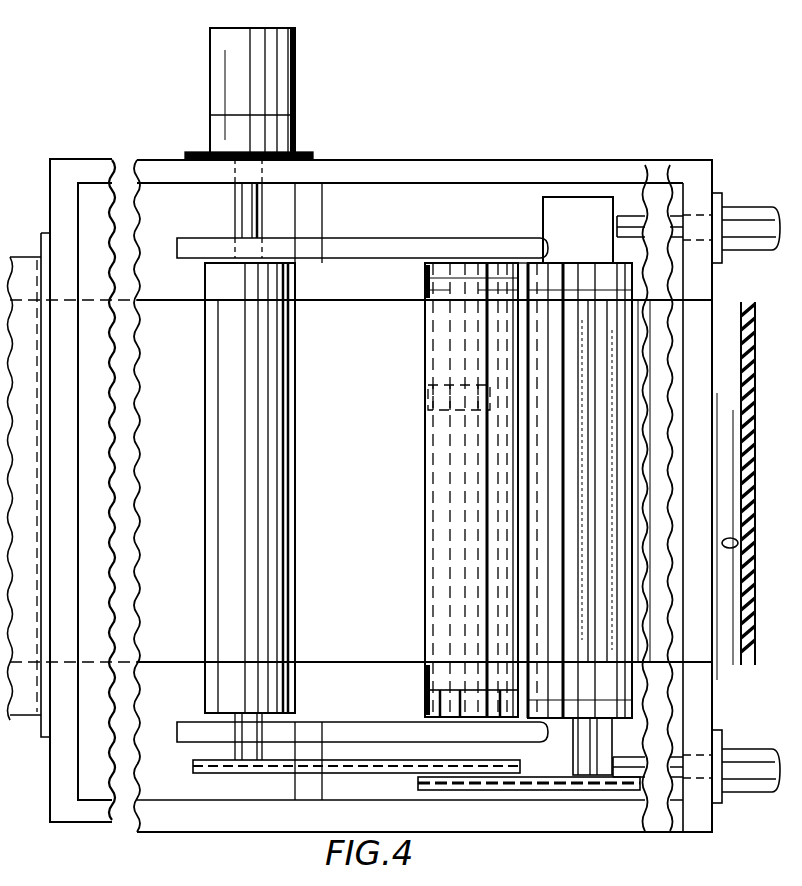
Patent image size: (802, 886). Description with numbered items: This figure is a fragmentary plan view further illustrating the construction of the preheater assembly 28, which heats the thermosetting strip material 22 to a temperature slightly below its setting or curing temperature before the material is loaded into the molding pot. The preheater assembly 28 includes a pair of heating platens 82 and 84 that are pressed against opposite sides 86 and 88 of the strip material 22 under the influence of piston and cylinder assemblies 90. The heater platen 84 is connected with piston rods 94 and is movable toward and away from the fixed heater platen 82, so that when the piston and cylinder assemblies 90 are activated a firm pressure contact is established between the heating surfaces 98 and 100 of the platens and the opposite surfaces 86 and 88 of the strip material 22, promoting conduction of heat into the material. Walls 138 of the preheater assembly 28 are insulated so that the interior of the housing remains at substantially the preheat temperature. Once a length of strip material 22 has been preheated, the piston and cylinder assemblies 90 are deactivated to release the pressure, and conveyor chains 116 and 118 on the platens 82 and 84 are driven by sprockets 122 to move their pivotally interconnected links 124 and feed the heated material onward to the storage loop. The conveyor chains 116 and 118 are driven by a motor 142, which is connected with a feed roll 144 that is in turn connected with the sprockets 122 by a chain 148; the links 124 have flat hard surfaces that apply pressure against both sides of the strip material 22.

The thermosetting strip material 22 is at (149, 288).
The preheater assembly 28 is at (480, 163).
The heating platen 82 is at (425, 280).
The heating platen 84 is at (633, 687).
The side of strip material 86 is at (755, 450).
The side of strip material 88 is at (738, 543).
The piston and cylinder assembly 90 is at (775, 200).
The piston rod 94 is at (670, 165).
The heating surface 98 is at (530, 260).
The heating surface 100 is at (550, 263).
The conveyor chain 116 is at (425, 699).
The conveyor chain 118 is at (622, 727).
The sprocket 122 is at (528, 783).
The link 124 is at (425, 405).
The wall 138 is at (400, 160).
The motor 142 is at (268, 64).
The feed roll 144 is at (270, 492).
The chain 148 is at (343, 778).